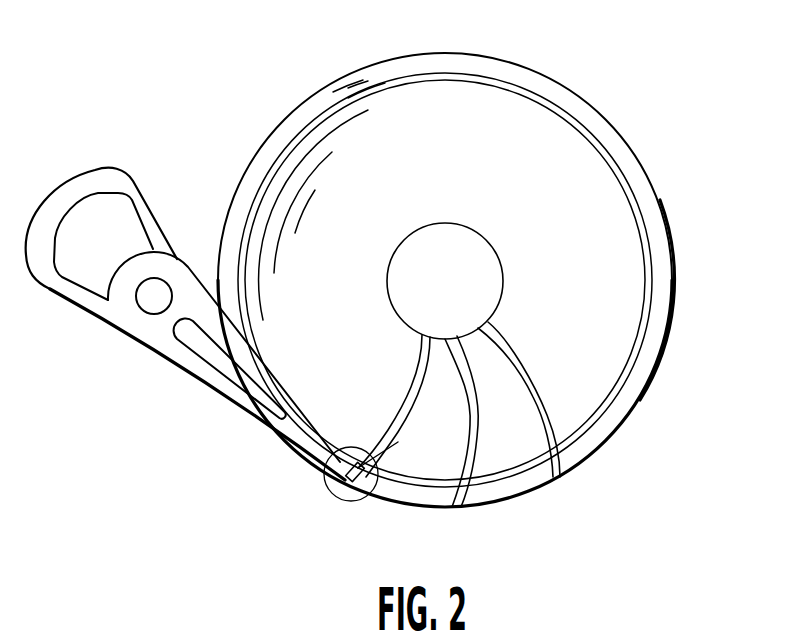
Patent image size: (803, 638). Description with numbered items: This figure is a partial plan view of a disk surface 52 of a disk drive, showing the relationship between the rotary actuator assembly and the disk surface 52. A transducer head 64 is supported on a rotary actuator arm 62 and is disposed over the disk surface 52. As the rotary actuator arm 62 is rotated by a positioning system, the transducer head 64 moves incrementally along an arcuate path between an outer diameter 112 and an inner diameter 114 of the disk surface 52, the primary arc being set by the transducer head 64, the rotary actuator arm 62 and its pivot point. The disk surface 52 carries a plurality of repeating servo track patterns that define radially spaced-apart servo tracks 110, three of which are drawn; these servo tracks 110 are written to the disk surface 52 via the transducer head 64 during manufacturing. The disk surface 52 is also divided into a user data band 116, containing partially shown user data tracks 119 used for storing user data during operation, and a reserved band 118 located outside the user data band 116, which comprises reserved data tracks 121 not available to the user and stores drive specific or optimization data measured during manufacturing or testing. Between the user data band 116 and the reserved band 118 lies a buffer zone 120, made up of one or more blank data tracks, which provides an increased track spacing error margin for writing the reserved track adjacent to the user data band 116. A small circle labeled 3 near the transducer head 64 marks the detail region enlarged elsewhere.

The disk surface 52 is at (608, 85).
The servo tracks 110 is at (550, 425).
The outer diameter 112 is at (665, 217).
The inner diameter 114 is at (487, 234).
The user data band 116 is at (465, 122).
The reserved band 118 is at (662, 325).
The user data tracks 119 is at (287, 178).
The buffer zone 120 is at (627, 180).
The reserved data tracks 121 is at (334, 51).
The rotary actuator arm 62 is at (150, 345).
The transducer head 64 is at (340, 483).
The detail area of FIG. 3 is at (358, 504).